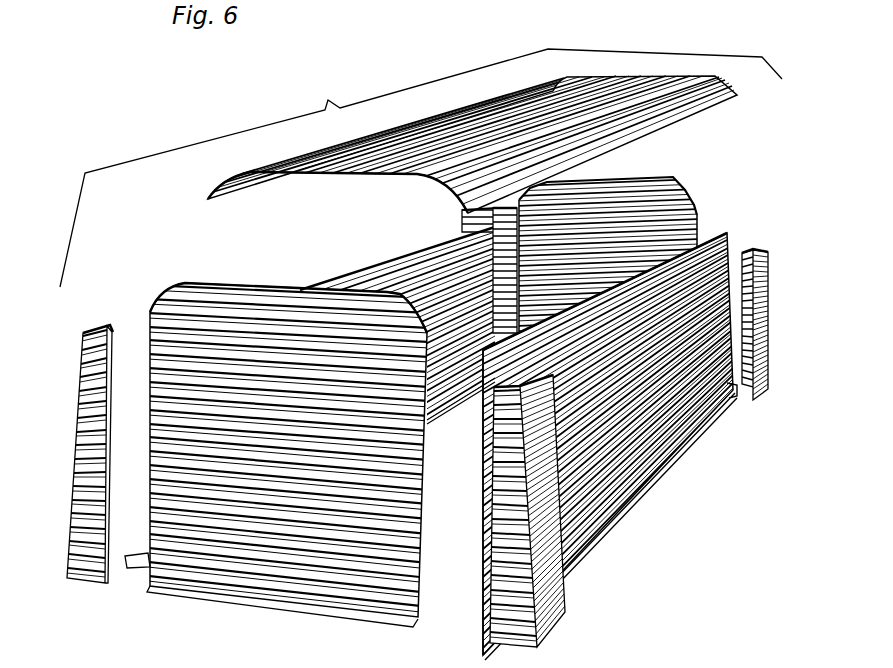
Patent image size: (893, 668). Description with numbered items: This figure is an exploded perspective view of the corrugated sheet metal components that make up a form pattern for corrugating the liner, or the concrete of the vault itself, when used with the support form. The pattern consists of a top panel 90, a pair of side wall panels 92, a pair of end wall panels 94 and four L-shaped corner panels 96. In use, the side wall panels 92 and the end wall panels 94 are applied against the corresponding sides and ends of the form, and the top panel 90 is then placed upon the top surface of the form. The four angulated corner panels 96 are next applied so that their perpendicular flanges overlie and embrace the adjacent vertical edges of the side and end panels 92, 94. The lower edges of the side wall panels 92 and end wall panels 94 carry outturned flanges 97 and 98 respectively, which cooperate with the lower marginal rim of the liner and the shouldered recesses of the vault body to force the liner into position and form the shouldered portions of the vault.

The top panel 90 is at (423, 128).
The side wall panels 92 is at (367, 275).
The end wall panels 94 is at (648, 187).
The L-shaped corner panels 96 is at (70, 552).
The outturned flange 97 is at (606, 530).
The outturned flange 98 is at (410, 622).